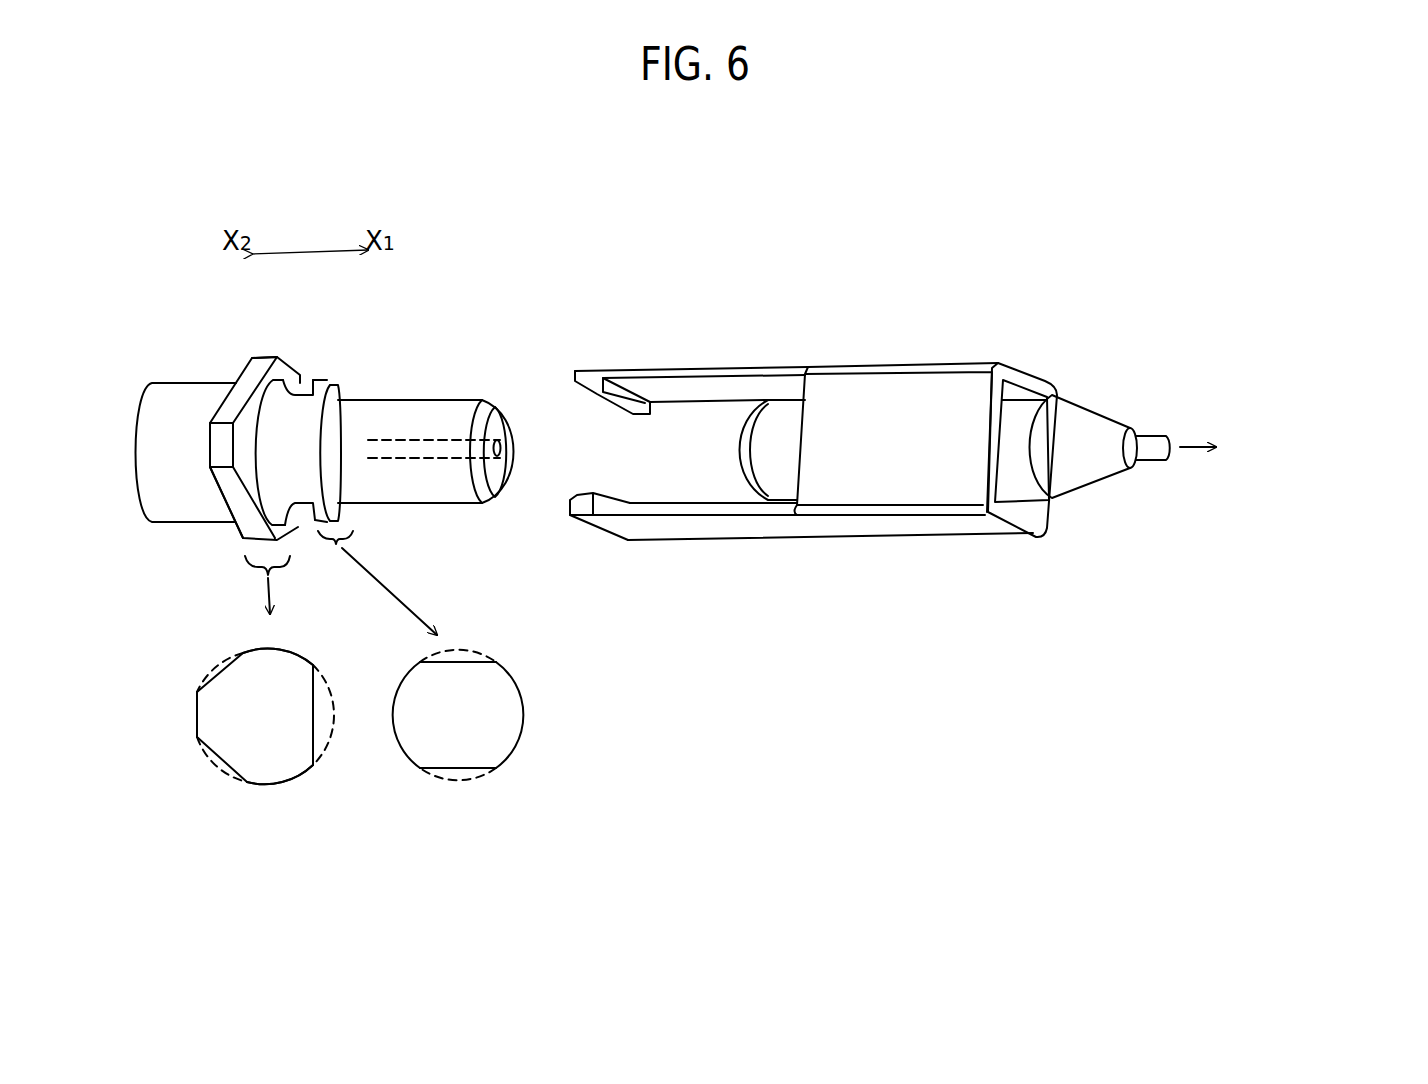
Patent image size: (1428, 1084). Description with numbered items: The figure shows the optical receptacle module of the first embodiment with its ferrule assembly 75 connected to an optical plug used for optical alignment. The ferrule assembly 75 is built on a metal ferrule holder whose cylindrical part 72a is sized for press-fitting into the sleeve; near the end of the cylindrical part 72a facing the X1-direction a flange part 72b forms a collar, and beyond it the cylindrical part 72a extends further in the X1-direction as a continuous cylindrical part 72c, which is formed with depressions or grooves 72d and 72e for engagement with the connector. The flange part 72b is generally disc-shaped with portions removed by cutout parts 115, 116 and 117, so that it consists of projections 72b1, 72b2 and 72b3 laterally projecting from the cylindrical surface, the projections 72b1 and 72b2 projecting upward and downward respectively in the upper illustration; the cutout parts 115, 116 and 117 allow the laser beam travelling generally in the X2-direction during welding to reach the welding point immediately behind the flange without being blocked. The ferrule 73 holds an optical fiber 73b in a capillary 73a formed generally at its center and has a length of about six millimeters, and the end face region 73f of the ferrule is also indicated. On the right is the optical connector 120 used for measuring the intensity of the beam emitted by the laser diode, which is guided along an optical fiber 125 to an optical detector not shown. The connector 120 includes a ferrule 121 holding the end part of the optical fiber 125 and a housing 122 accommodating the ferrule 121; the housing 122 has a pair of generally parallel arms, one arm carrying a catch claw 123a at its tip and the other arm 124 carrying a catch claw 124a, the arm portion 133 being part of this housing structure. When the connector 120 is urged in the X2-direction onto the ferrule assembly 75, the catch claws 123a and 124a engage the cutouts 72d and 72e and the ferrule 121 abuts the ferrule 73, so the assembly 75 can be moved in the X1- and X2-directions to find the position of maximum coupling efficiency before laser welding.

The ferrule assembly 75 is at (180, 274).
The cylindrical part 72a is at (172, 388).
The flange part 72b is at (266, 359).
The projection 72b1 is at (269, 359).
The projection 72b2 is at (282, 543).
The projection 72b3 is at (236, 444).
The continuous cylindrical part 72c is at (342, 378).
The depression 72d is at (313, 380).
The depression 72e is at (320, 545).
The ferrule 73 is at (421, 391).
The capillary 73a is at (422, 488).
The optical fiber 73b is at (499, 455).
The end face ring 73f is at (501, 418).
The cutout part 115 is at (214, 655).
The cutout part 116 is at (222, 765).
The cutout part 117 is at (326, 722).
The optical connector 120 is at (914, 271).
The ferrule 121 is at (782, 475).
The housing 122 is at (908, 380).
The catch claw 123a is at (595, 380).
The arm 124 is at (695, 518).
The catch claw 124a is at (587, 510).
The optical fiber 125 is at (1163, 462).
The upper arm 133 is at (724, 367).